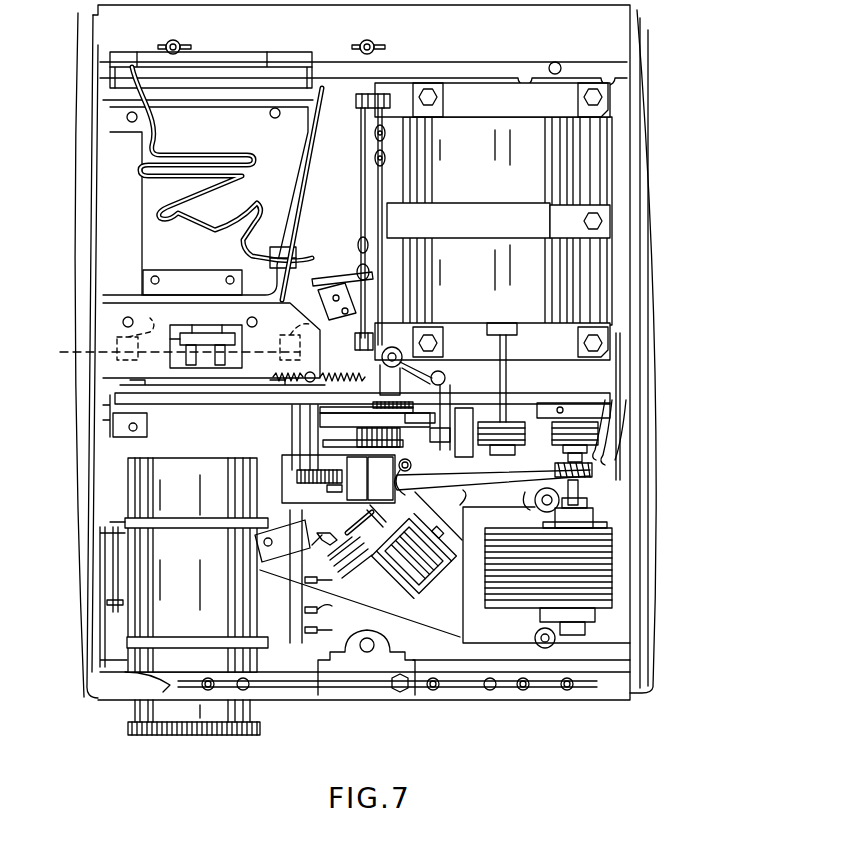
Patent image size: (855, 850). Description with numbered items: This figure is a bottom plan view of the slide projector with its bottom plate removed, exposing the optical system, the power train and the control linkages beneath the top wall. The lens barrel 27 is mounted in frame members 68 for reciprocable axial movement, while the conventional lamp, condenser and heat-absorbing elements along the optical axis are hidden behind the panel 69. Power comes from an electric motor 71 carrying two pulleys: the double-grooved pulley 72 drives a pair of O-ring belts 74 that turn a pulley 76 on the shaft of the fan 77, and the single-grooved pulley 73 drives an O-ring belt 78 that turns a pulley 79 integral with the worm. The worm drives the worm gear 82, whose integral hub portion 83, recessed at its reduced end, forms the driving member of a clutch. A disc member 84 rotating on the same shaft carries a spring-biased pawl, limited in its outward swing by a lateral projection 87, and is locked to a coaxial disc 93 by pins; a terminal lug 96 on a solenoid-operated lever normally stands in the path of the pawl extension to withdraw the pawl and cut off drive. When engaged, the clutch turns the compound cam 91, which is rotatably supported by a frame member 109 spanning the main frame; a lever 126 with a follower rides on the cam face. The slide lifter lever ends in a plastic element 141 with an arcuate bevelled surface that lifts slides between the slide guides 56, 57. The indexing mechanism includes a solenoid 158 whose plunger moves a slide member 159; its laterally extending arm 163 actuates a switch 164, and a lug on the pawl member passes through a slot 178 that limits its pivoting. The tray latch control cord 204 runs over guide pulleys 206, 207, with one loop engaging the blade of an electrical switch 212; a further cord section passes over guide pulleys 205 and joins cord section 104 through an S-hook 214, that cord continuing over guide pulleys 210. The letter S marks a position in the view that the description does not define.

The lens barrel 27 is at (115, 690).
The slide guide 56 is at (162, 352).
The slide guide 57 is at (290, 331).
The frame members 68 is at (120, 522).
The panel 69 is at (185, 263).
The electric motor 71 is at (495, 630).
The pulley 72 is at (600, 420).
The pulley 73 is at (595, 472).
The O-ring belts 74 is at (600, 435).
The pulley 76 is at (510, 425).
The fan 77 is at (506, 169).
The O-ring belt 78 is at (590, 496).
The pulley 79 is at (470, 489).
The worm gear 82 is at (297, 475).
The hub portion 83 is at (330, 444).
The disc member 84 is at (357, 436).
The lateral projection 87 is at (445, 435).
The compound cam 91 is at (440, 371).
The disc 93 is at (320, 410).
The terminal lug 96 is at (410, 420).
The cord section 104 is at (384, 190).
The frame member 109 is at (600, 396).
The lever 126 is at (445, 440).
The plastic element 141 is at (185, 330).
The solenoid 158 is at (413, 590).
The slide member 159 is at (470, 480).
The laterally extending arm 163 is at (350, 526).
The switch 164 is at (342, 568).
The slot 178 is at (318, 551).
The cord 204 is at (361, 175).
The guide pulleys 205 is at (384, 96).
The guide pulley 206 is at (374, 121).
The guide pulley 207 is at (358, 346).
The guide pulleys 210 is at (392, 346).
The electrical switch 212 is at (330, 280).
The S-hook 214 is at (376, 148).
The switch S is at (139, 330).